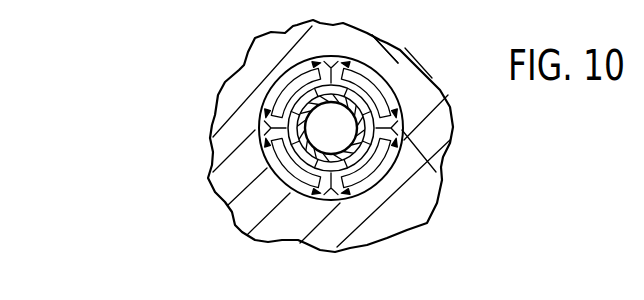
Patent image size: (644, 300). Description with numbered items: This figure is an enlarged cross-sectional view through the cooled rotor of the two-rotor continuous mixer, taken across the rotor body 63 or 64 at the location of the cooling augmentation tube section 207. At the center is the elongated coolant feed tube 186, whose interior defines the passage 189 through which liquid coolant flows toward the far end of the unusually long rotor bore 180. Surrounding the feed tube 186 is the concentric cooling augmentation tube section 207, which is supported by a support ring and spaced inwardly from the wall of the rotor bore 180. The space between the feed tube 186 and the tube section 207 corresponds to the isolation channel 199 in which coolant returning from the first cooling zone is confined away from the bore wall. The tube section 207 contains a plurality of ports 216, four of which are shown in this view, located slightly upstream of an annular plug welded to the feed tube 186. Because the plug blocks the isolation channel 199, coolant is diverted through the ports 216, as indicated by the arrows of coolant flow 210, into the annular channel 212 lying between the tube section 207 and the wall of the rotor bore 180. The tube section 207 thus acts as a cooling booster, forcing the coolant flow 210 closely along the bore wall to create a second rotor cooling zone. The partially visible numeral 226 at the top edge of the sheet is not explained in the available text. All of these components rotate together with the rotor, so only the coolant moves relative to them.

The first rotor body 63 is at (398, 136).
The second rotor body 64 is at (445, 168).
The rotor bore 180 is at (265, 157).
The coolant feed tube 186 is at (300, 100).
The passage 189 is at (343, 125).
The isolation channel 199 is at (365, 108).
The cooling augmentation tube section 207 is at (313, 197).
The coolant flow 210 is at (333, 53).
The annular channel 212 is at (400, 64).
The ports 216 is at (328, 188).
The element (off sheet) 226 is at (140, 5).